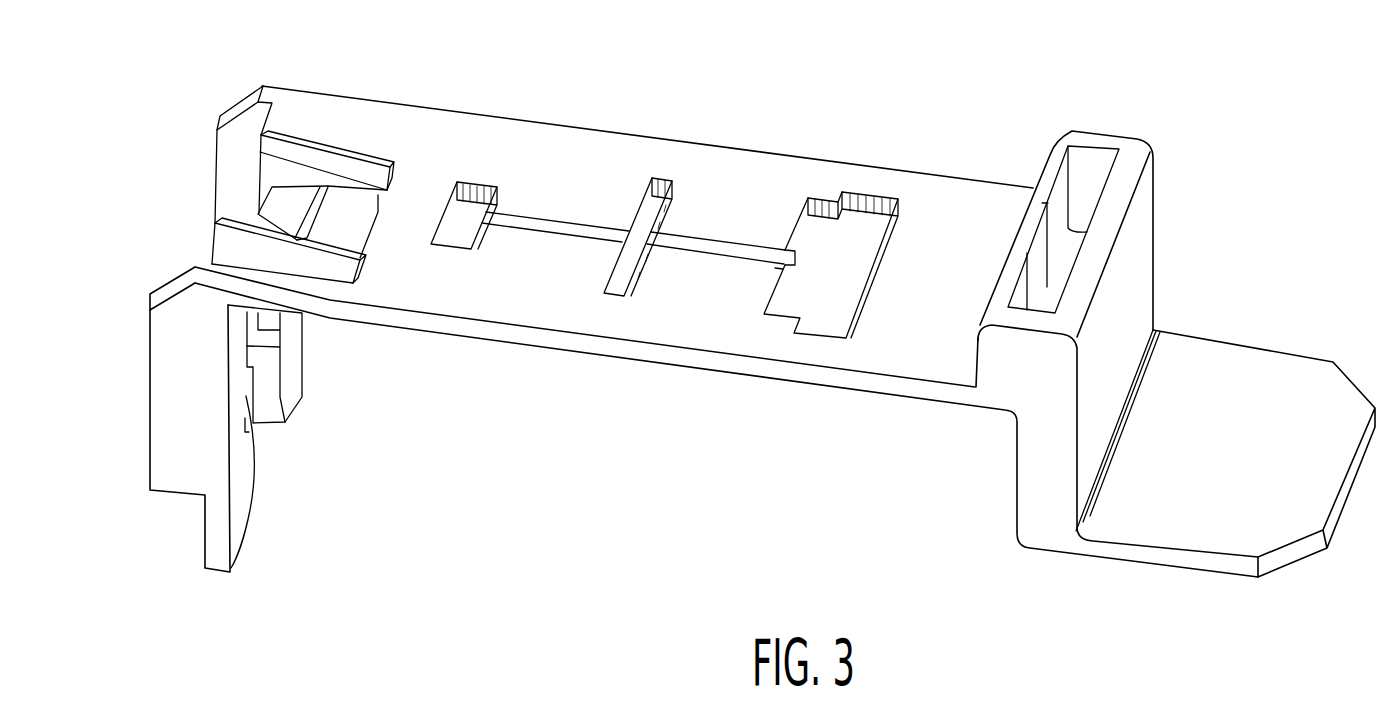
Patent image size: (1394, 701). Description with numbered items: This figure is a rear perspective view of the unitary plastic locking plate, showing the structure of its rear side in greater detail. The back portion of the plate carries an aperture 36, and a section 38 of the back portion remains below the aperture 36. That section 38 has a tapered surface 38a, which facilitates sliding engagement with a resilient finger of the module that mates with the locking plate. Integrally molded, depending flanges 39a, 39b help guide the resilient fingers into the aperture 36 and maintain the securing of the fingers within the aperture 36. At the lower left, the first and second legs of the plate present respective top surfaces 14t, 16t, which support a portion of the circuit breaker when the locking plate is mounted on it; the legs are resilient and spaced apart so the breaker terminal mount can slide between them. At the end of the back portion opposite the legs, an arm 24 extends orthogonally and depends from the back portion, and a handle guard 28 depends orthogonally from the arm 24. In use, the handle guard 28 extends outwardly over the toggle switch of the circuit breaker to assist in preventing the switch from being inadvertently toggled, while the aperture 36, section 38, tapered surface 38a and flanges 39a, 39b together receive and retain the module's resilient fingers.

The tapered surface 38a is at (288, 198).
The flange 39a is at (328, 158).
The aperture 36 is at (348, 233).
The section 38 is at (283, 224).
The flange 39b is at (240, 233).
The top surface 16t is at (289, 378).
The top surface 14t is at (242, 503).
The arm 24 is at (1028, 492).
The handle guard 28 is at (1195, 518).